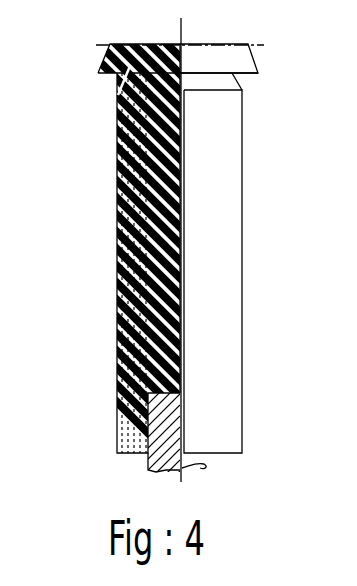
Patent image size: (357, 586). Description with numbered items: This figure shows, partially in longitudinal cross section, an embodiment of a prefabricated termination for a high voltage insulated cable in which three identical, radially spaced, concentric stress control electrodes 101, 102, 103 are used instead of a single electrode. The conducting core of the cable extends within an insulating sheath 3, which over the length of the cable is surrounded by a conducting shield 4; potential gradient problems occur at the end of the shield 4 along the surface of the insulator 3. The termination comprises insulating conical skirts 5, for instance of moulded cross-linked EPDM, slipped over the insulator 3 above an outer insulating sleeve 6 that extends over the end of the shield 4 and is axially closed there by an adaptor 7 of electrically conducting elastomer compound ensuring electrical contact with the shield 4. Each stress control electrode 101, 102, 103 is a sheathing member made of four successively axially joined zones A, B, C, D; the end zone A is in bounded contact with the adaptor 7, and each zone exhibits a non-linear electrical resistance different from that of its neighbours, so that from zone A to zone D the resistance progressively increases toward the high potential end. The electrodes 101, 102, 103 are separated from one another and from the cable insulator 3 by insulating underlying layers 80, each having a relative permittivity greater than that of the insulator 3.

The insulating sheath 3 is at (150, 110).
The conducting shield 4 is at (204, 458).
The insulating conical skirts 5 is at (243, 66).
The outer insulating sleeve 6 is at (124, 76).
The adaptor 7 is at (118, 410).
The insulating underlying layers 80 is at (140, 85).
The first stress control electrode 101 is at (157, 200).
The second stress control electrode 102 is at (165, 236).
The third stress control electrode 103 is at (165, 302).
The end electrode zone A is at (117, 320).
The second electrode zone B is at (117, 252).
The third electrode zone C is at (117, 185).
The fourth electrode zone D is at (117, 124).